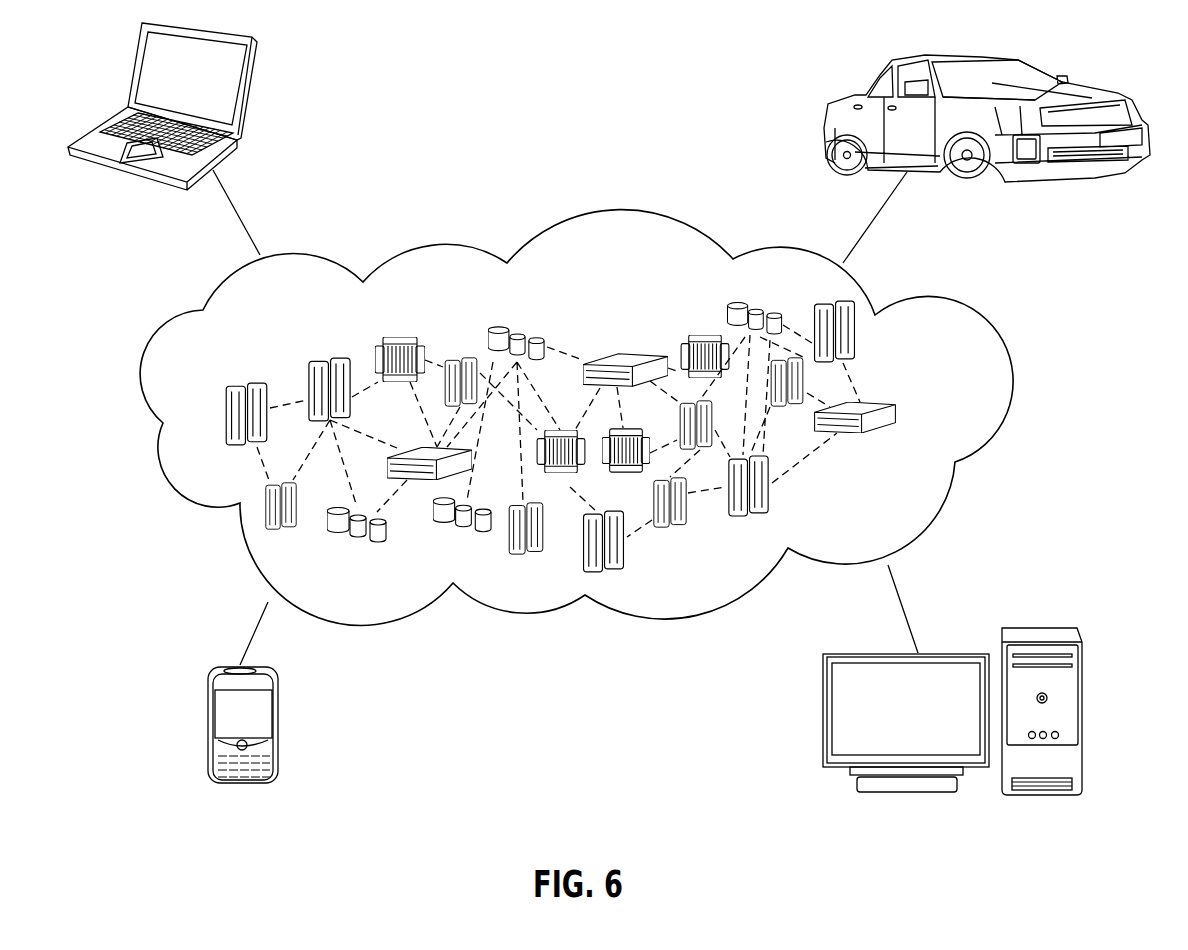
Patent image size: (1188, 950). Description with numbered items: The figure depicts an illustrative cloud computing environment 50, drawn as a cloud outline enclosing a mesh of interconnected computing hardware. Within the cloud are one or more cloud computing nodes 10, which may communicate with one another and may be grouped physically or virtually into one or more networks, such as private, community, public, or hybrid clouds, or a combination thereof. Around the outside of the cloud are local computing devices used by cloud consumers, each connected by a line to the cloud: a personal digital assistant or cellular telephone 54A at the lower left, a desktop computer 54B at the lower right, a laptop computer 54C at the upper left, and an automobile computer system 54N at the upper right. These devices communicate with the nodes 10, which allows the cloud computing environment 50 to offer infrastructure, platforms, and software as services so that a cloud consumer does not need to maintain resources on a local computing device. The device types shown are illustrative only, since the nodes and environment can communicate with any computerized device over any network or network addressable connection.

The cloud computing nodes 10 is at (938, 413).
The cloud computing environment 50 is at (962, 327).
The personal digital assistant (PDA) or cellular telephone 54A is at (208, 730).
The desktop computer 54B is at (1045, 627).
The laptop computer 54C is at (247, 92).
The automobile computer system 54N is at (833, 102).